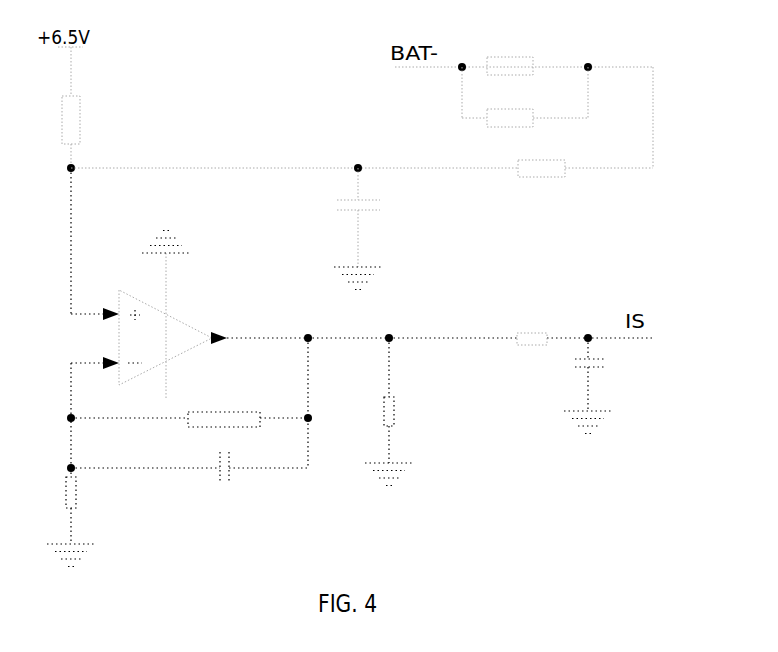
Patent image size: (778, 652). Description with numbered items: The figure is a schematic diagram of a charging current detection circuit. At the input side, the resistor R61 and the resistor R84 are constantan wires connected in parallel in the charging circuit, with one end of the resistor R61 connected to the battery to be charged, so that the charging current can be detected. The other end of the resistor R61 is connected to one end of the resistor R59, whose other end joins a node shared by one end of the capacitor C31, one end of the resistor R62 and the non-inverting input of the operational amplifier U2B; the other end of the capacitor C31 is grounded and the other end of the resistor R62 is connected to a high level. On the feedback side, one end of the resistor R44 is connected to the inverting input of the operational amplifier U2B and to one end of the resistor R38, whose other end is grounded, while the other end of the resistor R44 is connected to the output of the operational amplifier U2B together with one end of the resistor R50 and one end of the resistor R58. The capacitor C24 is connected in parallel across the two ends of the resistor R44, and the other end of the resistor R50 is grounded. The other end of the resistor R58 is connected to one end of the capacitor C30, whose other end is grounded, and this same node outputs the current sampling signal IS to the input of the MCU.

The resistor R62 is at (91, 120).
The resistor R59 is at (541, 158).
The resistor R61 is at (510, 55).
The resistor R84 is at (510, 107).
The capacitor C31 is at (376, 229).
The operational amplifier U2B is at (176, 316).
The resistor R44 is at (189, 409).
The capacitor C24 is at (189, 482).
The resistor R38 is at (82, 517).
The resistor R50 is at (401, 412).
The resistor R58 is at (533, 327).
The capacitor C30 is at (605, 386).